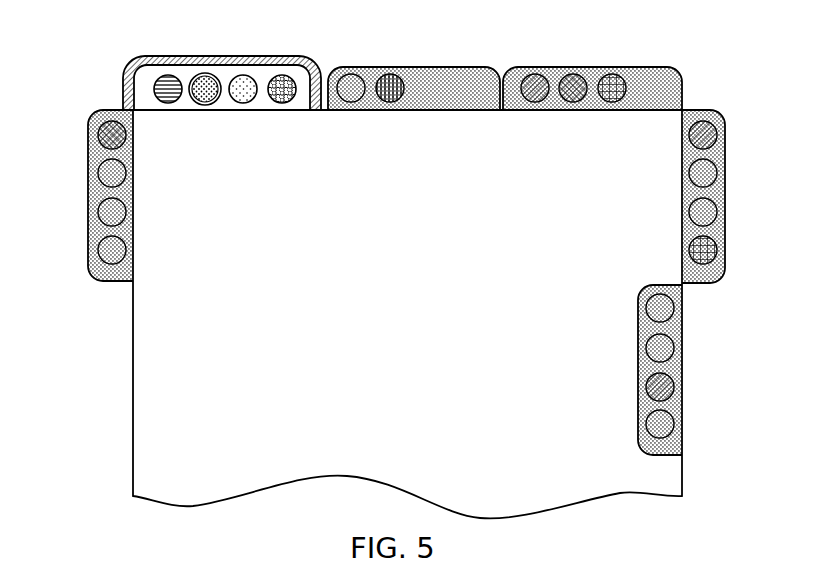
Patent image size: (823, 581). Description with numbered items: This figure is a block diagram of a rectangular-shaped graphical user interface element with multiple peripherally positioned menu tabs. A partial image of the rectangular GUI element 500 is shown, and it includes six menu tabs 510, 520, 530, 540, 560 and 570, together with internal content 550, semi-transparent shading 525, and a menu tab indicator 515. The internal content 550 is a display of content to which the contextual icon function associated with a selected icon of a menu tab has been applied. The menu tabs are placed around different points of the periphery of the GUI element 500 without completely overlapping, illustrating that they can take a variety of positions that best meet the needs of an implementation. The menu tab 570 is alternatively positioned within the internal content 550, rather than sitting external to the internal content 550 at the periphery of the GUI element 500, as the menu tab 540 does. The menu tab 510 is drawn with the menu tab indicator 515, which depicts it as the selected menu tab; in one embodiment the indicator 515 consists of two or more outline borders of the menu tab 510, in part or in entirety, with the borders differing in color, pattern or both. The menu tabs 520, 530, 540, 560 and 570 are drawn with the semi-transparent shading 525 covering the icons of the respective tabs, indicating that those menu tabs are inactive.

The rectangular GUI element 500 is at (133, 335).
The menu tab 510 is at (263, 78).
The menu tab indicator 515 is at (176, 65).
The menu tab 520 is at (372, 67).
The semi-transparent shading 525 is at (466, 82).
The menu tab 530 is at (557, 67).
The menu tab 540 is at (703, 110).
The internal content 550 is at (180, 404).
The menu tab 560 is at (113, 110).
The menu tab 570 is at (663, 455).